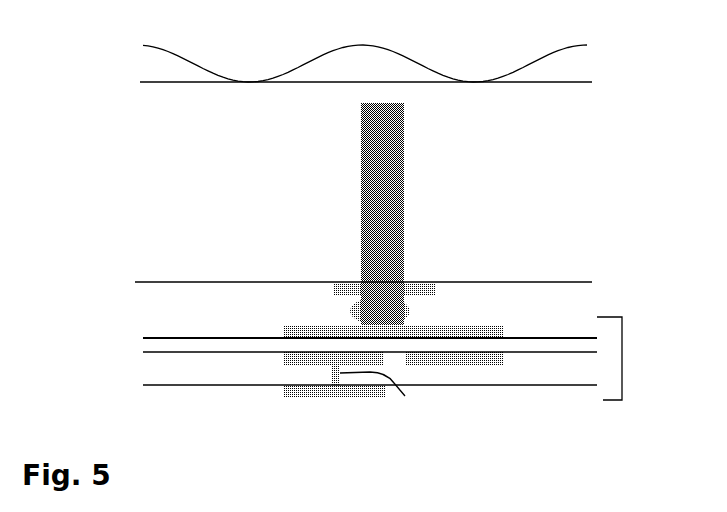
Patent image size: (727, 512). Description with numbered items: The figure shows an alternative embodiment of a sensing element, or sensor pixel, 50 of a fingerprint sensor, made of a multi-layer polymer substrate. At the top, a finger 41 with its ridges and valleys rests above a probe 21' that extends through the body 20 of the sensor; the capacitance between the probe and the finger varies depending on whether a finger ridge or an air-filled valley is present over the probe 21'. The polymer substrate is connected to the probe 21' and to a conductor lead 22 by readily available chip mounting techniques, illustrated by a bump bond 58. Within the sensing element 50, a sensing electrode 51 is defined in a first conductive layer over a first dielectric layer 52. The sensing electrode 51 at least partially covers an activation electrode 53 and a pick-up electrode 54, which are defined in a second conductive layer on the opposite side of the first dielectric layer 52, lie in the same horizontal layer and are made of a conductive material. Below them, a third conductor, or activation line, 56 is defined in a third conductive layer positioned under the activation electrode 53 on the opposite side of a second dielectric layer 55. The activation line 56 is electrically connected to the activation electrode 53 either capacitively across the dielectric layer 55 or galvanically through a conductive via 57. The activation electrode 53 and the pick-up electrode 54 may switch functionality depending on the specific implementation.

The finger 41 is at (366, 61).
The substrate body 20 is at (363, 231).
The probe 21' is at (409, 214).
The conductor lead 22 is at (418, 285).
The bump bond 58 is at (402, 309).
The sensing electrode 51 is at (512, 319).
The first dielectric layer 52 is at (153, 344).
The second dielectric layer 55 is at (158, 372).
The activation electrode 53 is at (292, 361).
The pick-up electrode 54 is at (493, 357).
The activation line 56 is at (340, 390).
The conductive via 57 is at (379, 402).
The sensing element 50 is at (630, 358).